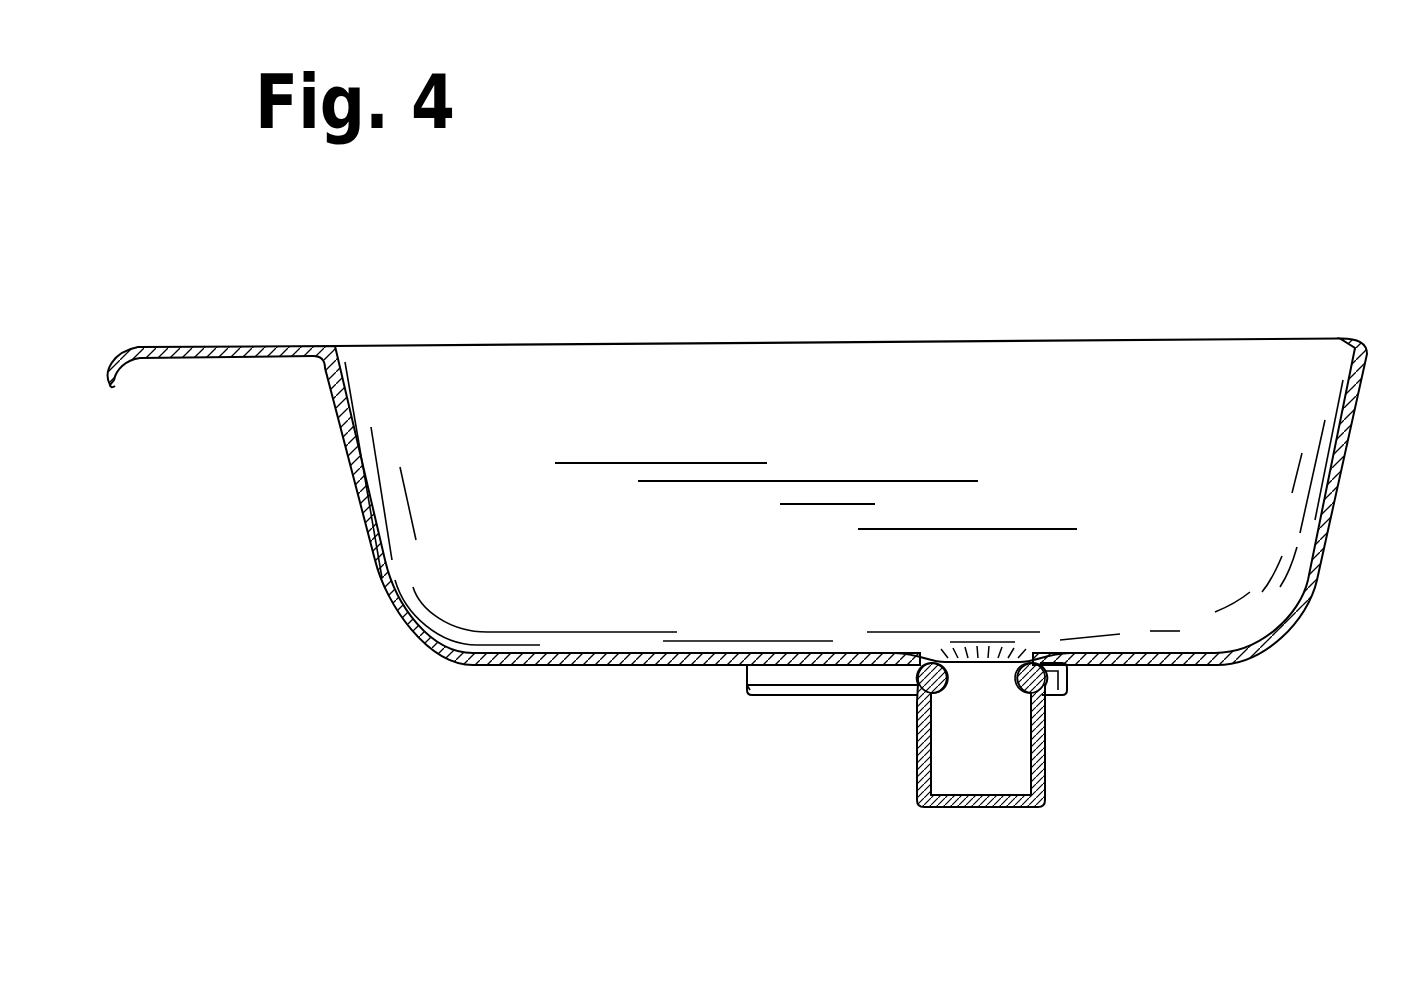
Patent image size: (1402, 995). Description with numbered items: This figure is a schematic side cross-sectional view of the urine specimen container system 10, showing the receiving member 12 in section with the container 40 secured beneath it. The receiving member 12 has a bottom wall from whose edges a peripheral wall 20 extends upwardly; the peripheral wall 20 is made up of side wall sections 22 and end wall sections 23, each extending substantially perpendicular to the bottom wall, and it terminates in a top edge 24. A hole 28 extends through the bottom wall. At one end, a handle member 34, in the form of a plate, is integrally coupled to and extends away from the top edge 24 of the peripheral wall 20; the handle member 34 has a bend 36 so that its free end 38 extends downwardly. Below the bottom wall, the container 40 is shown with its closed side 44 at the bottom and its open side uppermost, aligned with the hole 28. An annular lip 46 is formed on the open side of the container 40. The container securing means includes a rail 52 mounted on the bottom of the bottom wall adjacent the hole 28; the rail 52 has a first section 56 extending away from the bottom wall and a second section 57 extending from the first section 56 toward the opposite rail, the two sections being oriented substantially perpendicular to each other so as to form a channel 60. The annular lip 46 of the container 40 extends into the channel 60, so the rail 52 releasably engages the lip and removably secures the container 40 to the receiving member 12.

The urine specimen container system 10 is at (986, 190).
The receiving member 12 is at (935, 381).
The peripheral wall 20 is at (1095, 425).
The side wall sections 22 is at (772, 377).
The end wall sections 23 is at (352, 488).
The top edge 24 is at (612, 343).
The hole 28 is at (990, 655).
The handle member 34 is at (244, 346).
The bend 36 is at (127, 346).
The free end 38 is at (116, 386).
The container 40 is at (1048, 748).
The closed side 44 is at (985, 808).
The annular lip 46 is at (916, 693).
The rail 52 is at (863, 689).
The first section 56 is at (757, 673).
The second section 57 is at (757, 692).
The channel 60 is at (798, 672).